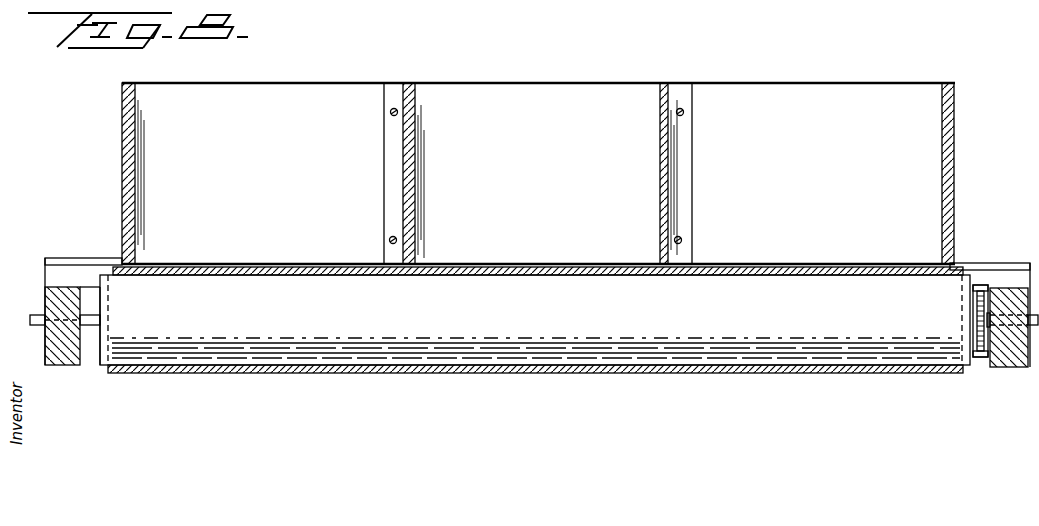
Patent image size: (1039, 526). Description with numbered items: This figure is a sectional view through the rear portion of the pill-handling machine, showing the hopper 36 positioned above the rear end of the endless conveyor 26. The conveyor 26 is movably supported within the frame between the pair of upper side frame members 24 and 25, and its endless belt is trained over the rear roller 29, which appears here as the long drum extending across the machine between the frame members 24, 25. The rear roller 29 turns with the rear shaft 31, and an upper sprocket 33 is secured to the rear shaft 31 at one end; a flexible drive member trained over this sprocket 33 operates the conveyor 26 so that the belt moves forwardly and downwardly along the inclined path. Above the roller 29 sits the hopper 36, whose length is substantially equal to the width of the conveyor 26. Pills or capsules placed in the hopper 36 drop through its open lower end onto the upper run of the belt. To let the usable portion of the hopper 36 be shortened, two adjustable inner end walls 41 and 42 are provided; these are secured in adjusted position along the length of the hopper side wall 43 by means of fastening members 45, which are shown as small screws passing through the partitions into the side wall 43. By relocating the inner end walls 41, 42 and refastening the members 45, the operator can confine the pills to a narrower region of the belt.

The upper side frame member 24 is at (1010, 355).
The upper side frame member 25 is at (67, 287).
The endless conveyor 26 is at (250, 274).
The rear roller 29 is at (845, 288).
The rear shaft 31 is at (93, 312).
The upper sprocket 33 is at (972, 302).
The hopper 36 is at (345, 97).
The adjustable inner end wall 41 is at (660, 173).
The adjustable inner end wall 42 is at (408, 198).
The side wall 43 is at (572, 95).
The fastening member 45 is at (390, 113).